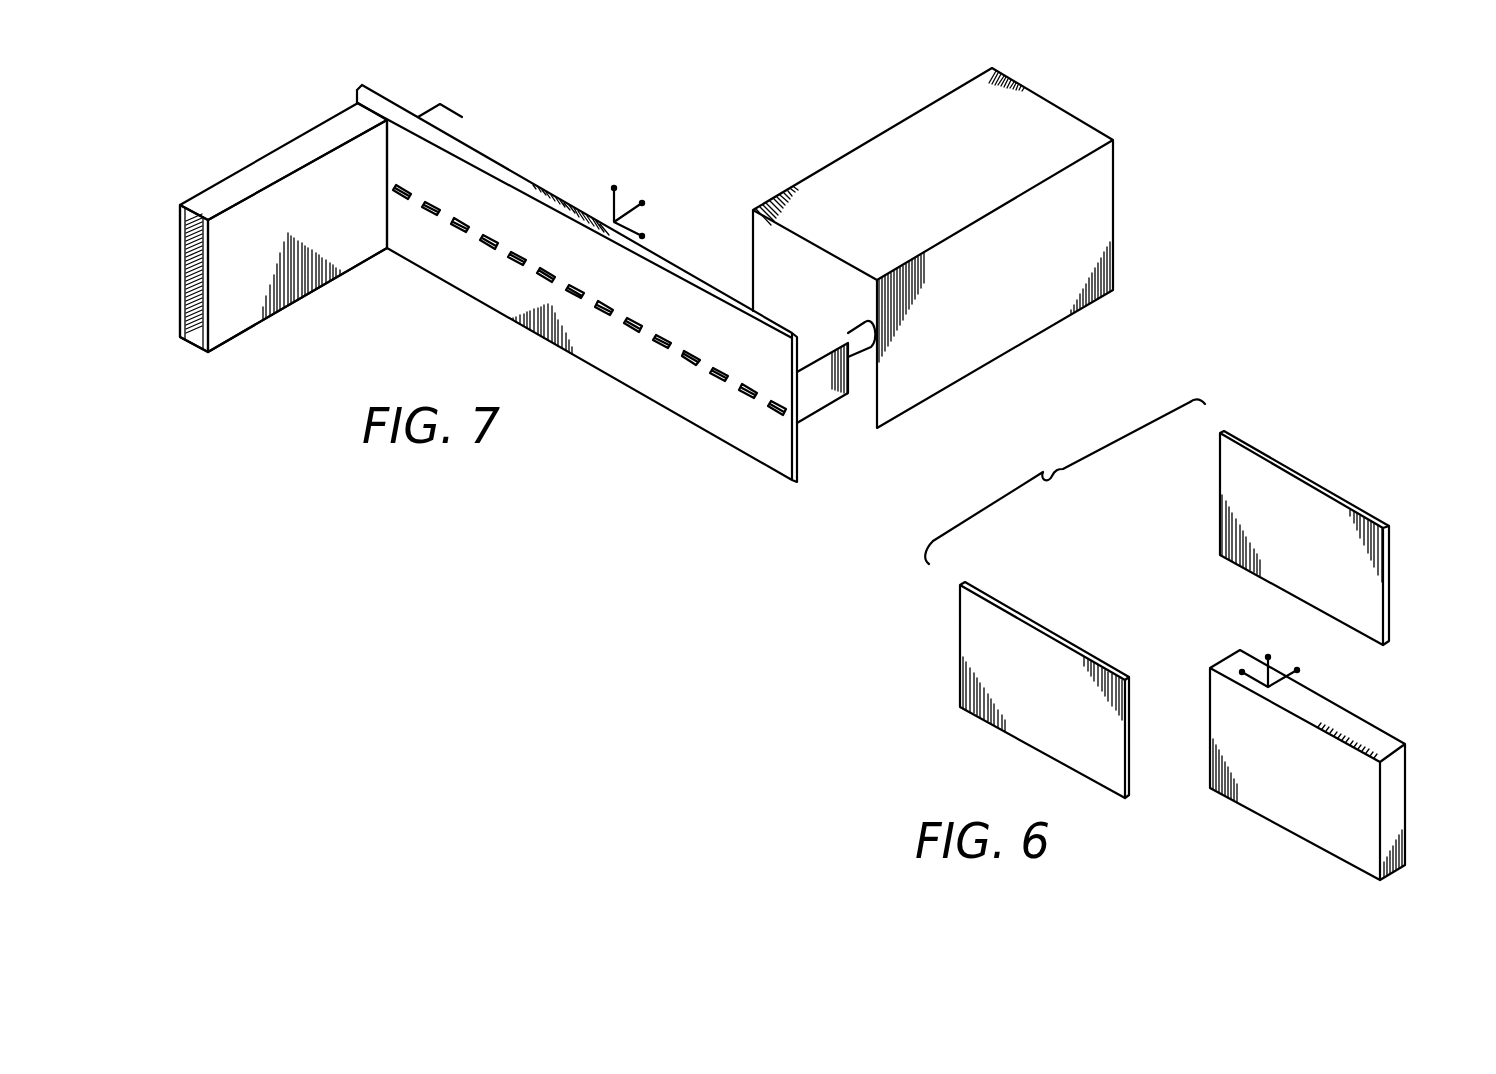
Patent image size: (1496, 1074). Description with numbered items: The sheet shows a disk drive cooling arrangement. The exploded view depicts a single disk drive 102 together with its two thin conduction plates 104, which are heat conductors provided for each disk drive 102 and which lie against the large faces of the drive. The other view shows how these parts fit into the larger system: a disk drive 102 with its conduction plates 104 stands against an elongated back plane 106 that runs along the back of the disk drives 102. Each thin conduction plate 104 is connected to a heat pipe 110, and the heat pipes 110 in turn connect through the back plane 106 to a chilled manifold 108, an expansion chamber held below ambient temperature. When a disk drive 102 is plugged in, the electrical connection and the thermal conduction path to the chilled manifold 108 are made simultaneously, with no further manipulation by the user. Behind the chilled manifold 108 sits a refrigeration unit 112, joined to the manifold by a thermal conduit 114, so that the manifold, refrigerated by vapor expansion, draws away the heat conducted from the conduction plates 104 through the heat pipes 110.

In FIG. 7, the disk drive 102 is at (192, 344).
In FIG. 6, the disk drive 102 is at (1293, 797).
In FIG. 7, the conduction plate 104 is at (177, 242).
In FIG. 6, the conduction plate 104 is at (1373, 597).
In FIG. 7, the back plane 106 is at (652, 380).
In FIG. 7, the chilled manifold 108 is at (812, 402).
In FIG. 7, the heat pipe 110 is at (462, 216).
In FIG. 7, the refrigeration unit 112 is at (833, 183).
In FIG. 7, the thermal conduit 114 is at (848, 343).